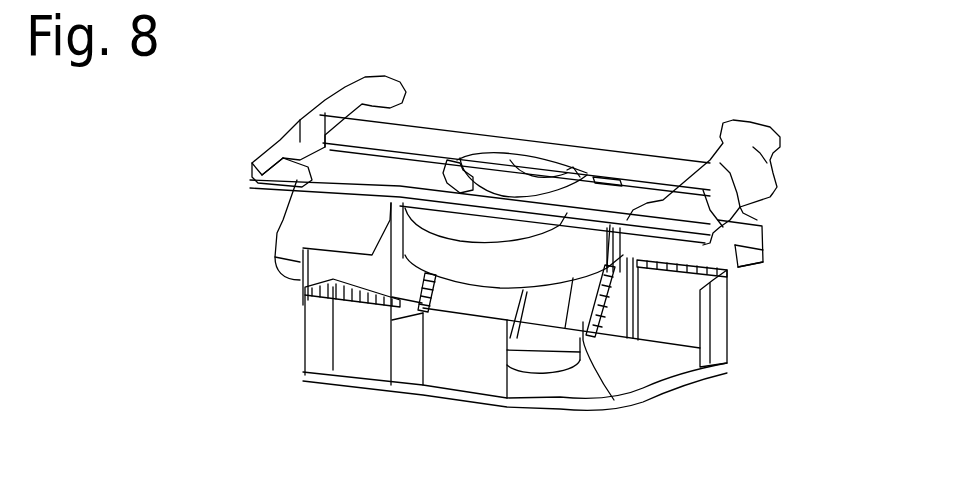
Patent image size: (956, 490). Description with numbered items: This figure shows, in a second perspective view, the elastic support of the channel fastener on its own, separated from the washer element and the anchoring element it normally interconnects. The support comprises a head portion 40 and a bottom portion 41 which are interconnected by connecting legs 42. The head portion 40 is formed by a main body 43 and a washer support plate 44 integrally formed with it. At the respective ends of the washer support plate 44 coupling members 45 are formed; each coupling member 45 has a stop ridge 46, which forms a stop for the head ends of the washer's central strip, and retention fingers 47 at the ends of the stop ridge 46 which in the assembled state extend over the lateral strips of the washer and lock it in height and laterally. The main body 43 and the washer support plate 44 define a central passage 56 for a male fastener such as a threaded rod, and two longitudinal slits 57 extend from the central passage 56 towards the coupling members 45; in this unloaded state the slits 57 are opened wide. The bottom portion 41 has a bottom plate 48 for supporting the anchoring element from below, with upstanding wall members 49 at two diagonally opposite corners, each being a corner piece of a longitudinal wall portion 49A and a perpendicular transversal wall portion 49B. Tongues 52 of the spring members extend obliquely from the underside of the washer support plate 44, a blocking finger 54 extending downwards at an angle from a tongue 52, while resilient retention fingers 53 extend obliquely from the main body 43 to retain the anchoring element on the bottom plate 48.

The head portion 40 is at (262, 230).
The bottom portion 41 is at (770, 360).
The connecting legs 42 is at (460, 350).
The main body 43 is at (407, 287).
The washer support plate 44 is at (623, 160).
The coupling members 45 is at (296, 115).
The stop ridge 46 is at (340, 117).
The retention fingers 47 is at (388, 80).
The bottom plate 48 is at (520, 405).
The upstanding wall members 49 is at (292, 358).
The longitudinal wall portion 49A is at (332, 350).
The transversal wall portion 49B is at (330, 279).
The tongues 52 is at (332, 203).
The resilient retention fingers 53 is at (448, 260).
The blocking finger 54 is at (287, 270).
The central passage 56 is at (505, 180).
The longitudinal slits 57 is at (422, 160).